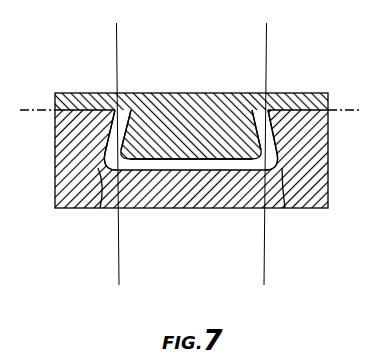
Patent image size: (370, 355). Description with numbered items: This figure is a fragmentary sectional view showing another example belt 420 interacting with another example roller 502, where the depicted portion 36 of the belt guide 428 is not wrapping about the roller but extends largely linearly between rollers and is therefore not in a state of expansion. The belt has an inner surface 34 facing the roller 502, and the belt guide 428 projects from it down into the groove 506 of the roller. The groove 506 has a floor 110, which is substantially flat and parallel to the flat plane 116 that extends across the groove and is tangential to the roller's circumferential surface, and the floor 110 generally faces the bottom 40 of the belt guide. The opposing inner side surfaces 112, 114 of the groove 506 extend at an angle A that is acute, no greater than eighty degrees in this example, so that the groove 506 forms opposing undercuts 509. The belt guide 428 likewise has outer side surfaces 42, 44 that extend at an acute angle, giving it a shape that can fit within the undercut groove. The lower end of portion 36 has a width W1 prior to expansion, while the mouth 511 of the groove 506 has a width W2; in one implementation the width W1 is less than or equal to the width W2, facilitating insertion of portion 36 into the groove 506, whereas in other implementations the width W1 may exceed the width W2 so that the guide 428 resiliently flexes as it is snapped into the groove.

The inner surface 34 is at (303, 113).
The portion of belt guide 36 is at (217, 92).
The bottom 40 is at (191, 133).
The outer side surface 42 is at (133, 123).
The outer side surface 44 is at (250, 125).
The floor 110 is at (162, 171).
The inner side surface 112 is at (110, 138).
The inner side surface 114 is at (285, 168).
The flat plane 116 is at (44, 110).
The belt 420 is at (91, 95).
The belt guide 428 is at (209, 168).
The roller 502 is at (52, 167).
The groove 506 is at (97, 156).
The undercut 509 is at (100, 208).
The mouth 511 is at (272, 125).
The angle A is at (298, 139).
The width W1 is at (120, 257).
The width W2 is at (118, 37).